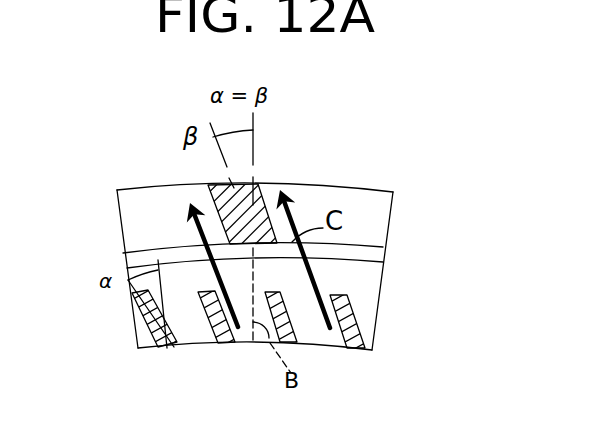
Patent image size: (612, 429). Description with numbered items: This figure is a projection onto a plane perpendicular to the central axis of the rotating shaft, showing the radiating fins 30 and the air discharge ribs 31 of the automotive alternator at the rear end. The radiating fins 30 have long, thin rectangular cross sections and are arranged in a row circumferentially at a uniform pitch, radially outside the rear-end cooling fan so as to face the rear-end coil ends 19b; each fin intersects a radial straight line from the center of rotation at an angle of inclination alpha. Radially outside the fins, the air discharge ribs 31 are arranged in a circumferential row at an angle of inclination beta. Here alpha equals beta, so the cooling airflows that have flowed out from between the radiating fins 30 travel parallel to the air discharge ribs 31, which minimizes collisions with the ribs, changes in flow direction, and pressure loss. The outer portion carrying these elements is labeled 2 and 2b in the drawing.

The rotor 2 is at (403, 200).
The rotor core outer portion 2b is at (357, 195).
The rear-end coil ends 19b is at (372, 283).
The radiating fins 30 is at (348, 322).
The air discharge ribs 31 is at (262, 196).